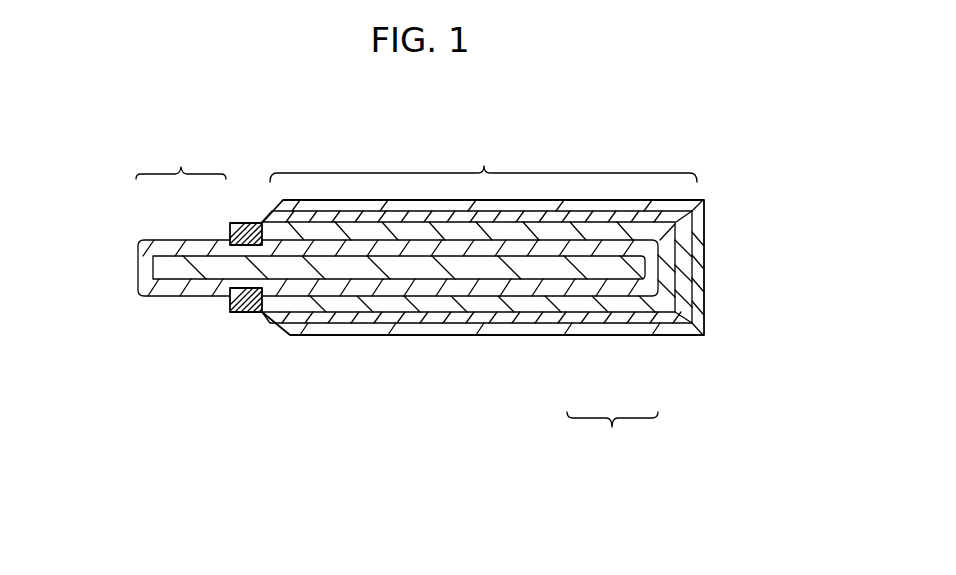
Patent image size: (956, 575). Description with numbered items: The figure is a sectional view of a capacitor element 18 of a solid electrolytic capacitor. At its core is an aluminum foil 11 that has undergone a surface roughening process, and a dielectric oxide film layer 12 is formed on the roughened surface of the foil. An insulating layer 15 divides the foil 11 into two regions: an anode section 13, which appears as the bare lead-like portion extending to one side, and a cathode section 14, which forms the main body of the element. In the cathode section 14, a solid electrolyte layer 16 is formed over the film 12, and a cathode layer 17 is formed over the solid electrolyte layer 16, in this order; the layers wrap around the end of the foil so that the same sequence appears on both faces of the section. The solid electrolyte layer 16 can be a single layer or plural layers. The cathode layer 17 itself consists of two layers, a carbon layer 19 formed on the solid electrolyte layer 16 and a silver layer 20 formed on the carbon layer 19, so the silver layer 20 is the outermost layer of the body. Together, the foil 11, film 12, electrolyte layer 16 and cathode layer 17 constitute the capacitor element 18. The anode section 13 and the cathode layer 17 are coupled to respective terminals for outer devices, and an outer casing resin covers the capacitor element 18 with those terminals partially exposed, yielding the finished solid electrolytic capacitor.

The aluminum foil 11 is at (163, 272).
The dielectric oxide film layer 12 is at (208, 289).
The anode section 13 is at (181, 158).
The cathode section 14 is at (483, 160).
The insulating layer 15 is at (245, 306).
The solid electrolyte layer 16 is at (402, 303).
The cathode layer 17 is at (612, 437).
The capacitor element 18 is at (720, 270).
The carbon layer 19 is at (543, 320).
The silver layer 20 is at (590, 330).